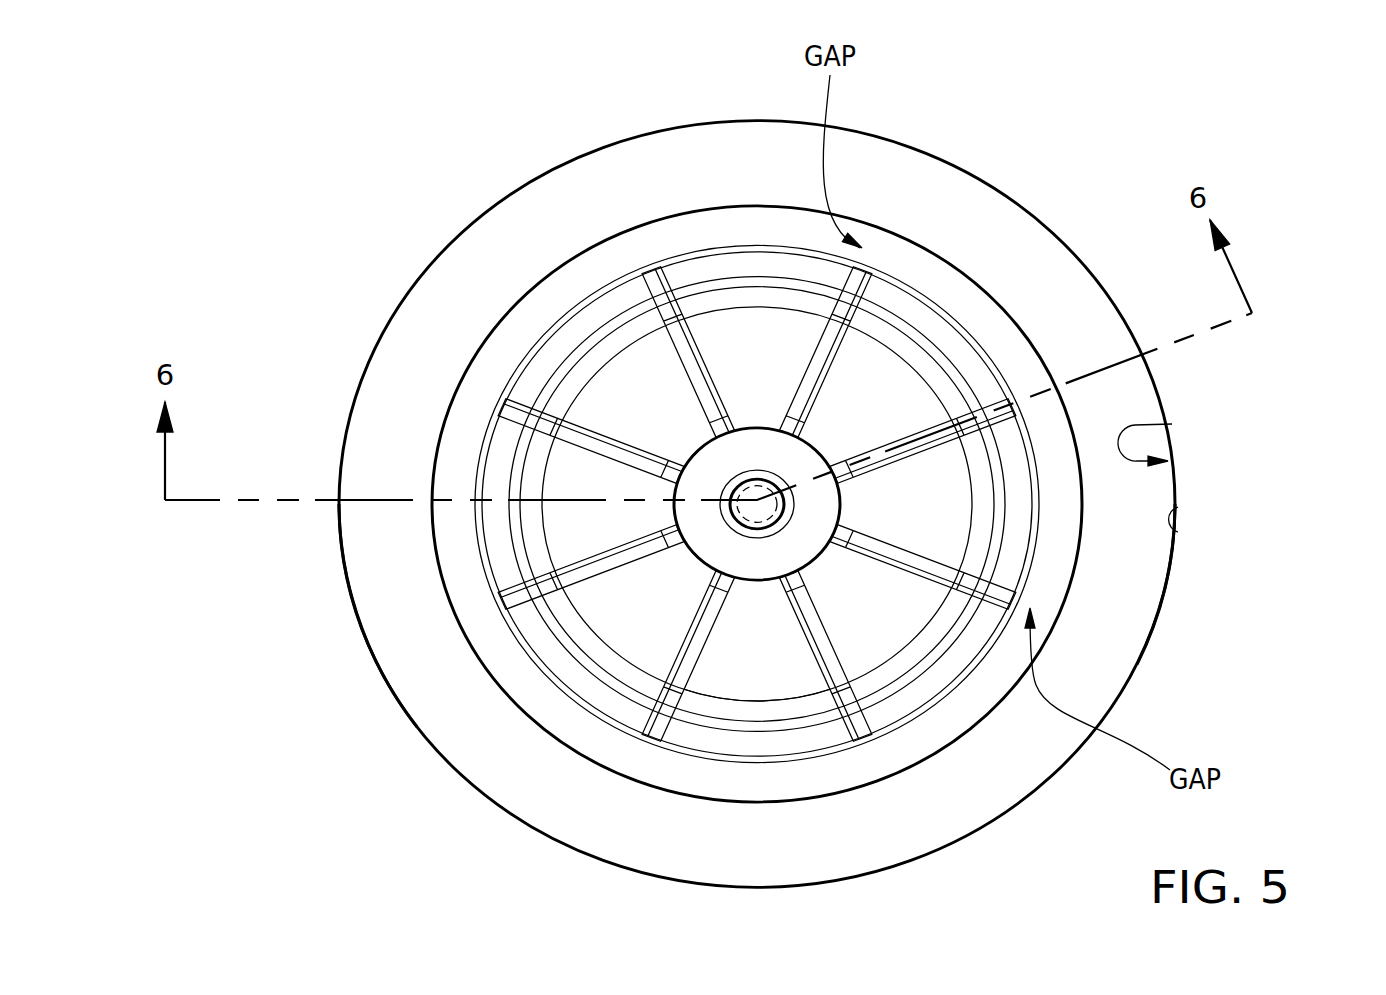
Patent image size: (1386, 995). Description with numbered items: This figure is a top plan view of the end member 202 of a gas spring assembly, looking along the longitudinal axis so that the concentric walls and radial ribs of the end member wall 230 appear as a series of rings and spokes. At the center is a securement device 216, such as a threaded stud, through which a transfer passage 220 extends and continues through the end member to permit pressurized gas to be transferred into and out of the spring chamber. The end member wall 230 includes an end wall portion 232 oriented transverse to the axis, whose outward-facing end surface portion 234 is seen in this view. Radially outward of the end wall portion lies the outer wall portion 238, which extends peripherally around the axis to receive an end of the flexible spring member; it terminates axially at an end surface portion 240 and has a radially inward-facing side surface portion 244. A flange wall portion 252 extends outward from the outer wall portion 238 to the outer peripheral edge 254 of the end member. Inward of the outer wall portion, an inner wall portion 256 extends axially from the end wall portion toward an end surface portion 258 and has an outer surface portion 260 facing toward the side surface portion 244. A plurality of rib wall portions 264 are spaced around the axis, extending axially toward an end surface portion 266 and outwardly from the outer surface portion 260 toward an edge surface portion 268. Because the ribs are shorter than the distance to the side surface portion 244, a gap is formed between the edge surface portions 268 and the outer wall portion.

The end member 202 is at (1083, 150).
The securement device 216 is at (733, 480).
The transfer passage 220 is at (756, 477).
The end member wall 230 is at (437, 705).
The end wall portion 232 is at (617, 370).
The end surface portion 234 is at (603, 410).
The outer wall portion 238 is at (1172, 424).
The end surface portion 240 is at (1137, 593).
The side surface portion 244 is at (1178, 507).
The flange wall portion 252 is at (345, 597).
The outer peripheral edge 254 is at (368, 660).
The inner wall portion 256 is at (688, 553).
The end surface portion 258 is at (790, 457).
The outer surface portion 260 is at (700, 545).
The rib wall portions 264 is at (788, 622).
The end surface portion 266 is at (612, 550).
The edge surface portion 268 is at (847, 698).